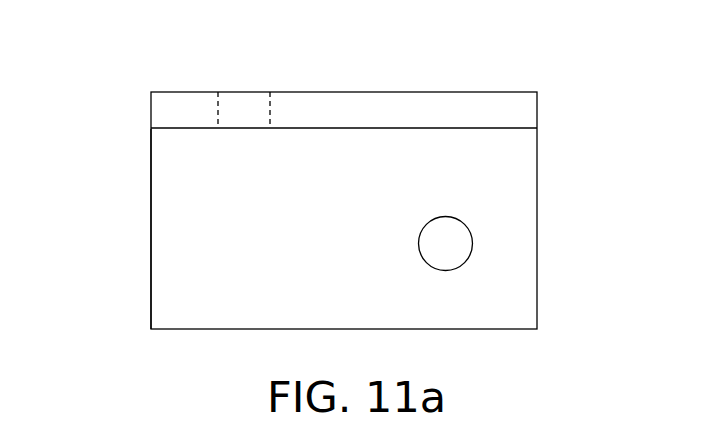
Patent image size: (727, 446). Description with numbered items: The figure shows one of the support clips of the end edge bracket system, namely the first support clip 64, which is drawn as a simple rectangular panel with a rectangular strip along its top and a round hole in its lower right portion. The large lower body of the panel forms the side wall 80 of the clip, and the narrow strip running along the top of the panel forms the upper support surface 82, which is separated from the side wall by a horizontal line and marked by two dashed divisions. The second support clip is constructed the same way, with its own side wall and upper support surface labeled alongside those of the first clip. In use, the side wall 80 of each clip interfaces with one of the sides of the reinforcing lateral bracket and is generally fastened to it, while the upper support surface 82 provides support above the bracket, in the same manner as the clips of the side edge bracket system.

The first support clip 64 is at (537, 265).
The side wall 80 is at (138, 231).
The upper support surface 82 is at (482, 85).